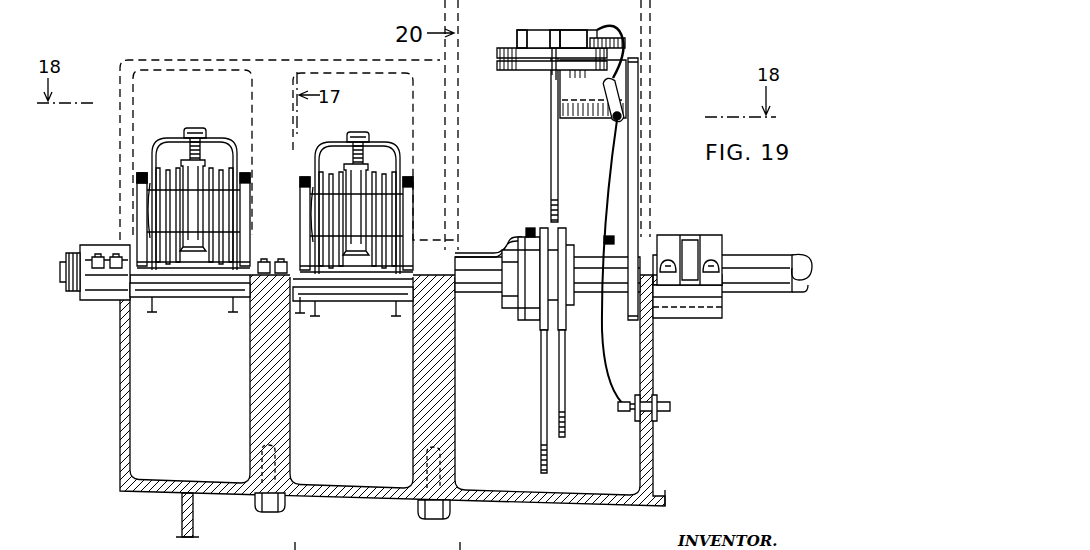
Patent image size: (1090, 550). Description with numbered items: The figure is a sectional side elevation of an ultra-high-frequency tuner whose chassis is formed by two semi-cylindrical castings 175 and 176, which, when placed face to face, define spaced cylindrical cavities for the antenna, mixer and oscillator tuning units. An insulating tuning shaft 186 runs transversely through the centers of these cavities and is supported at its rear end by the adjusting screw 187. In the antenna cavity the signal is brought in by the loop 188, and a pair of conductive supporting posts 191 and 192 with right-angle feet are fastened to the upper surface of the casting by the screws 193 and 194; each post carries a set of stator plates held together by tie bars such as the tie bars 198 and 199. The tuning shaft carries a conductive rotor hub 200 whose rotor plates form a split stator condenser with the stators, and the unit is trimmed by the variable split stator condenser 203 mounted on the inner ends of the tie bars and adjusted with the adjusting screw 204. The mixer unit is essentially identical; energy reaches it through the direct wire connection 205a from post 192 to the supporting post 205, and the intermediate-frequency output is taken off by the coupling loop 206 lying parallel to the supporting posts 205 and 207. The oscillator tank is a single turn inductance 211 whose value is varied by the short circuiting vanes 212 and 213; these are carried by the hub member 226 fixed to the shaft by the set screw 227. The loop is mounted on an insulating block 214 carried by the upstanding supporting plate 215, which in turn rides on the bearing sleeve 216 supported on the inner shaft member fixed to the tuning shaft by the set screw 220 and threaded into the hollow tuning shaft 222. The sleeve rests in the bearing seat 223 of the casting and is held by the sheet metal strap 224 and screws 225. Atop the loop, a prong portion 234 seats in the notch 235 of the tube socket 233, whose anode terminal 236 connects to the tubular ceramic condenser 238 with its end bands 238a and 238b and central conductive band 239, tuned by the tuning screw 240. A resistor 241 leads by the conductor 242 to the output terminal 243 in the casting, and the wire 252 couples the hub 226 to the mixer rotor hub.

The semi-cylindrical casting 175 is at (312, 60).
The semi-cylindrical casting 176 is at (664, 451).
The tuning shaft 186 is at (489, 286).
The adjusting screw 187 is at (72, 286).
The loop 188 is at (214, 140).
The supporting post 191 is at (138, 201).
The supporting post 192 is at (250, 203).
The screw 193 is at (115, 257).
The screw 194 is at (263, 260).
The tie bar 198 is at (146, 174).
The tie bar 199 is at (148, 190).
The rotor hub 200 is at (198, 284).
The variable split stator condenser 203 is at (205, 166).
The adjusting screw 204 is at (191, 128).
The supporting post 205 is at (300, 200).
The direct wire connection 205a is at (300, 292).
The coupling loop 206 is at (378, 134).
The supporting post 207 is at (415, 188).
The single turn inductance 211 is at (551, 157).
The short circuiting vane 212 is at (541, 407).
The short circuiting vane 213 is at (565, 412).
The insulating block 214 is at (591, 106).
The supporting plate 215 is at (639, 184).
The bearing sleeve 216 is at (700, 240).
The set screw 220 is at (606, 236).
The hollow tuning shaft 222 is at (782, 276).
The bearing seat 223 is at (697, 300).
The sheet metal strap 224 is at (690, 265).
The screw 225 is at (714, 264).
The hub member 226 is at (525, 310).
The set screw 227 is at (529, 228).
The tube socket 233 is at (506, 66).
The prong portion 234 is at (554, 78).
The notch 235 is at (552, 62).
The anode terminal 236 is at (520, 46).
The tubular ceramic condenser 238 is at (576, 31).
The annular conductive band 238a is at (523, 30).
The annular conductive band 238b is at (601, 33).
The central conductive band 239 is at (554, 30).
The tuning screw 240 is at (630, 32).
The resistor 241 is at (622, 91).
The conductor 242 is at (610, 372).
The output terminal 243 is at (661, 404).
The wire 252 is at (454, 253).